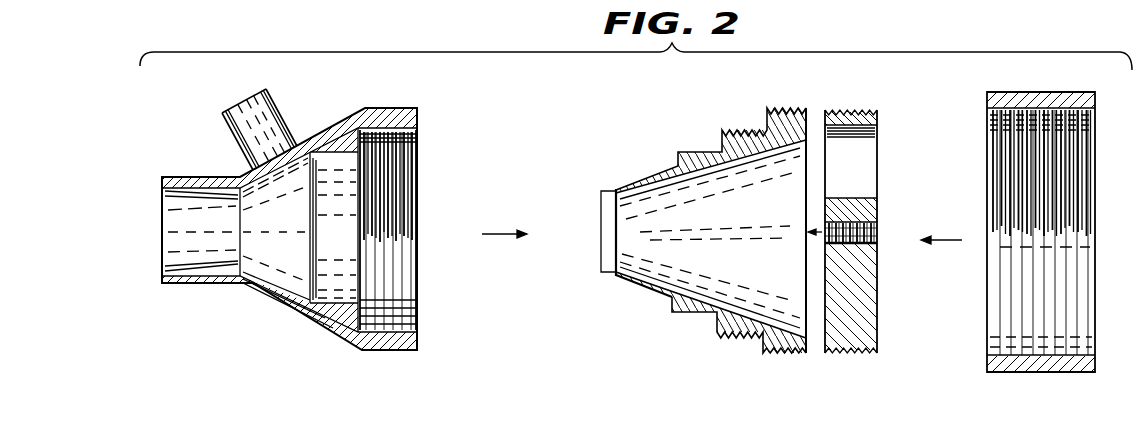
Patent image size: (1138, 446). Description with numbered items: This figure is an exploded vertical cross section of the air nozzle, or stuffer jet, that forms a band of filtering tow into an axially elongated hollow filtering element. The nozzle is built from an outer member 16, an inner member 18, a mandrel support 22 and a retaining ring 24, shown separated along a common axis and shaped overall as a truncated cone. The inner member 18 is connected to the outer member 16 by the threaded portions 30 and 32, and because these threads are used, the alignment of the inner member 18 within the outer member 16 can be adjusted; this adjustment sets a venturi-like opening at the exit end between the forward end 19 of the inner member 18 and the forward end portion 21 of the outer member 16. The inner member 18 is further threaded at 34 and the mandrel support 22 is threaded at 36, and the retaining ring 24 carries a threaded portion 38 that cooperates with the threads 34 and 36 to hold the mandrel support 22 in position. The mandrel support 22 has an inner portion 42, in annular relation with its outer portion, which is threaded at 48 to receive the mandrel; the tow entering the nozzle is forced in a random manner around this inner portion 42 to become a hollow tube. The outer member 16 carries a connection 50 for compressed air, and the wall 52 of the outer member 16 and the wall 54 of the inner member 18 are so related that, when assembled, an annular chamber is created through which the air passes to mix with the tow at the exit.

The outer member 16 is at (392, 351).
The inner member 18 is at (692, 235).
The forward end of inner member 19 is at (600, 273).
The forward end portion of outer member 21 is at (233, 258).
The mandrel support 22 is at (855, 158).
The retaining ring 24 is at (1077, 317).
The threaded portion 30 is at (753, 130).
The threaded portion 32 is at (417, 322).
The threads of inner member 34 is at (789, 356).
The threads of mandrel support 36 is at (843, 355).
The threaded portion of retaining ring 38 is at (1007, 350).
The inner portion of mandrel support 42 is at (880, 210).
The threads of inner portion 48 is at (878, 240).
The connection for compressed air 50 is at (281, 117).
The wall of outer member 52 is at (268, 281).
The wall of inner member 54 is at (645, 287).